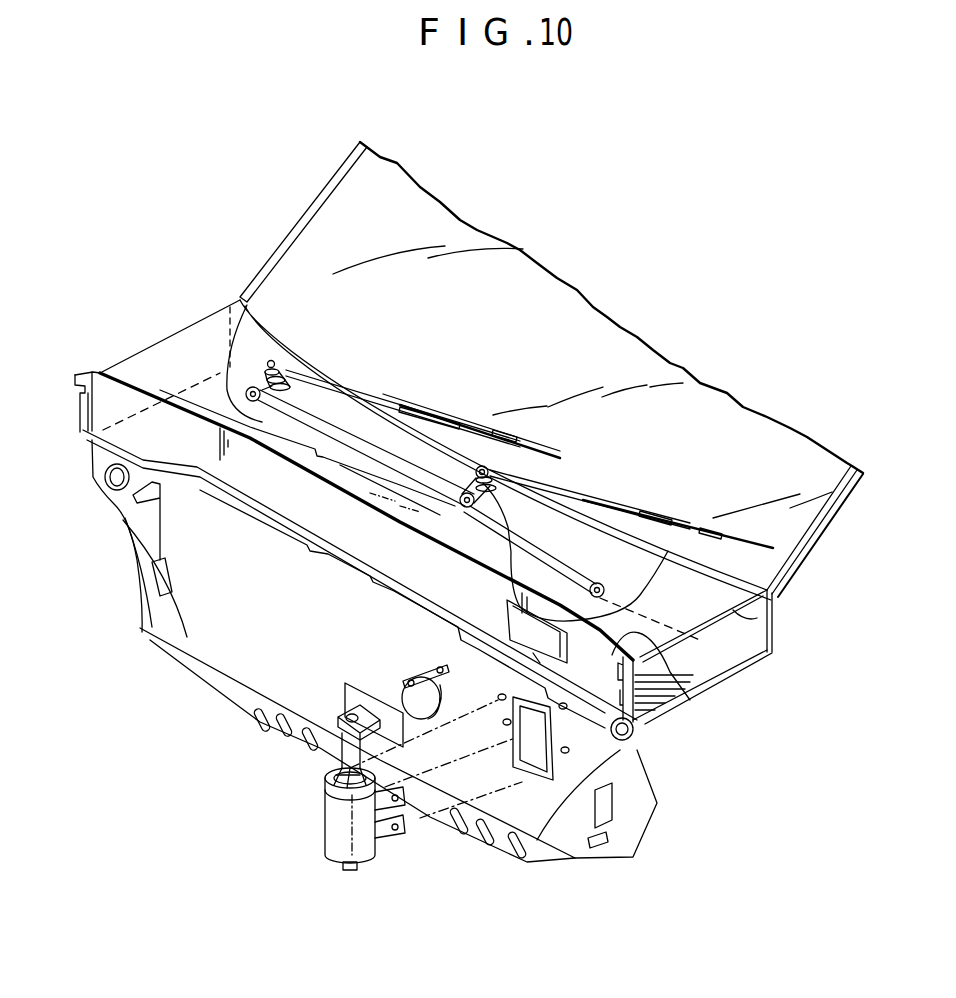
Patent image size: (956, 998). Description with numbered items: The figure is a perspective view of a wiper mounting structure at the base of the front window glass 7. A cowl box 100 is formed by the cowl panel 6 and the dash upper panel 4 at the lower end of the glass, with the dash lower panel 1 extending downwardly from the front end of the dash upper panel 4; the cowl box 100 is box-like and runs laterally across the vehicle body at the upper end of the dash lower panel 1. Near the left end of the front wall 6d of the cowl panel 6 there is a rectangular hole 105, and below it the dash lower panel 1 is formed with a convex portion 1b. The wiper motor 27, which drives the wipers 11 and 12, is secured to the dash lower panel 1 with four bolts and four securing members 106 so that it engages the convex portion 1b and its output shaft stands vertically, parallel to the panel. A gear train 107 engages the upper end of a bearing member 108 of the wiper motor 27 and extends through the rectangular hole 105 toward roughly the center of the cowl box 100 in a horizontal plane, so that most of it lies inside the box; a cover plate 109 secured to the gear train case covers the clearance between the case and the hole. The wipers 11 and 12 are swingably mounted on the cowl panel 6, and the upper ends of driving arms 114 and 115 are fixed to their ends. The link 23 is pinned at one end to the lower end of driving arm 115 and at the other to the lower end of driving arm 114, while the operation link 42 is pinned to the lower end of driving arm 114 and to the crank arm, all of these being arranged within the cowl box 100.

The front window glass 7 is at (572, 356).
The dash lower panel 1 is at (217, 650).
The convex portion 1b is at (537, 753).
The link 23 is at (347, 452).
The wiper 12 is at (317, 380).
The wiper 11 is at (547, 484).
The driving arm 115 is at (300, 400).
The driving arm 114 is at (512, 523).
The operation link 42 is at (505, 570).
The cowl box 100 is at (730, 657).
The cowl panel 6 is at (757, 618).
The dash upper panel 4 is at (750, 662).
The front wall 6d is at (664, 673).
The rectangular hole 105 is at (640, 708).
The cover plate 109 is at (345, 685).
The gear train 107 is at (389, 680).
The bearing member 108 is at (340, 748).
The wiper motor 27 is at (340, 830).
The securing members 106 is at (400, 820).